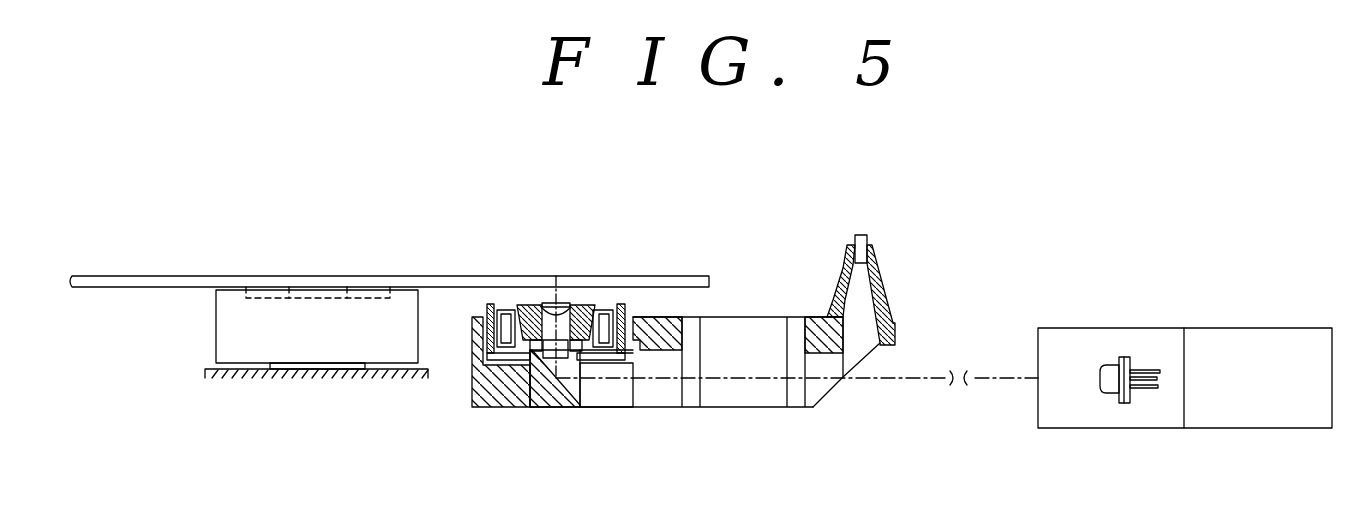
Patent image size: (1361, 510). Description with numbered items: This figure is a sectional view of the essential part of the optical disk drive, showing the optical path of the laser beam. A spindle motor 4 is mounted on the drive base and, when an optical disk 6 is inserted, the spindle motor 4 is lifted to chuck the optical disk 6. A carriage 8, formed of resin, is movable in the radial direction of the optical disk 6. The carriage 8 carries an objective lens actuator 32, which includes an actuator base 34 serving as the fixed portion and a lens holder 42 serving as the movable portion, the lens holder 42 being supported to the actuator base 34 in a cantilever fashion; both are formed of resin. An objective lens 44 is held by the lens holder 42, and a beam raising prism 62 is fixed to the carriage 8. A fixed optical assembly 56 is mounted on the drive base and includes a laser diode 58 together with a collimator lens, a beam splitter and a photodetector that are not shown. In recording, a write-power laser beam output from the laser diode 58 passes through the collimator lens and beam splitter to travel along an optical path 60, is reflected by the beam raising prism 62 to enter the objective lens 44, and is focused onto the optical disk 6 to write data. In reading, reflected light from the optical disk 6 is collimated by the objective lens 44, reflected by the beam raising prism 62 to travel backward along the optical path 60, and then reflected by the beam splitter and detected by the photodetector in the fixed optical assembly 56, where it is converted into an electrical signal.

The spindle motor 4 is at (310, 340).
The optical disk 6 is at (178, 276).
The carriage 8 is at (487, 398).
The objective lens actuator 32 is at (576, 412).
The actuator base 34 is at (628, 310).
The lens holder 42 is at (528, 305).
The objective lens 44 is at (565, 300).
The fixed optical assembly 56 is at (1237, 342).
The laser diode 58 is at (1107, 368).
The optical path 60 is at (913, 381).
The beam raising prism 62 is at (547, 403).